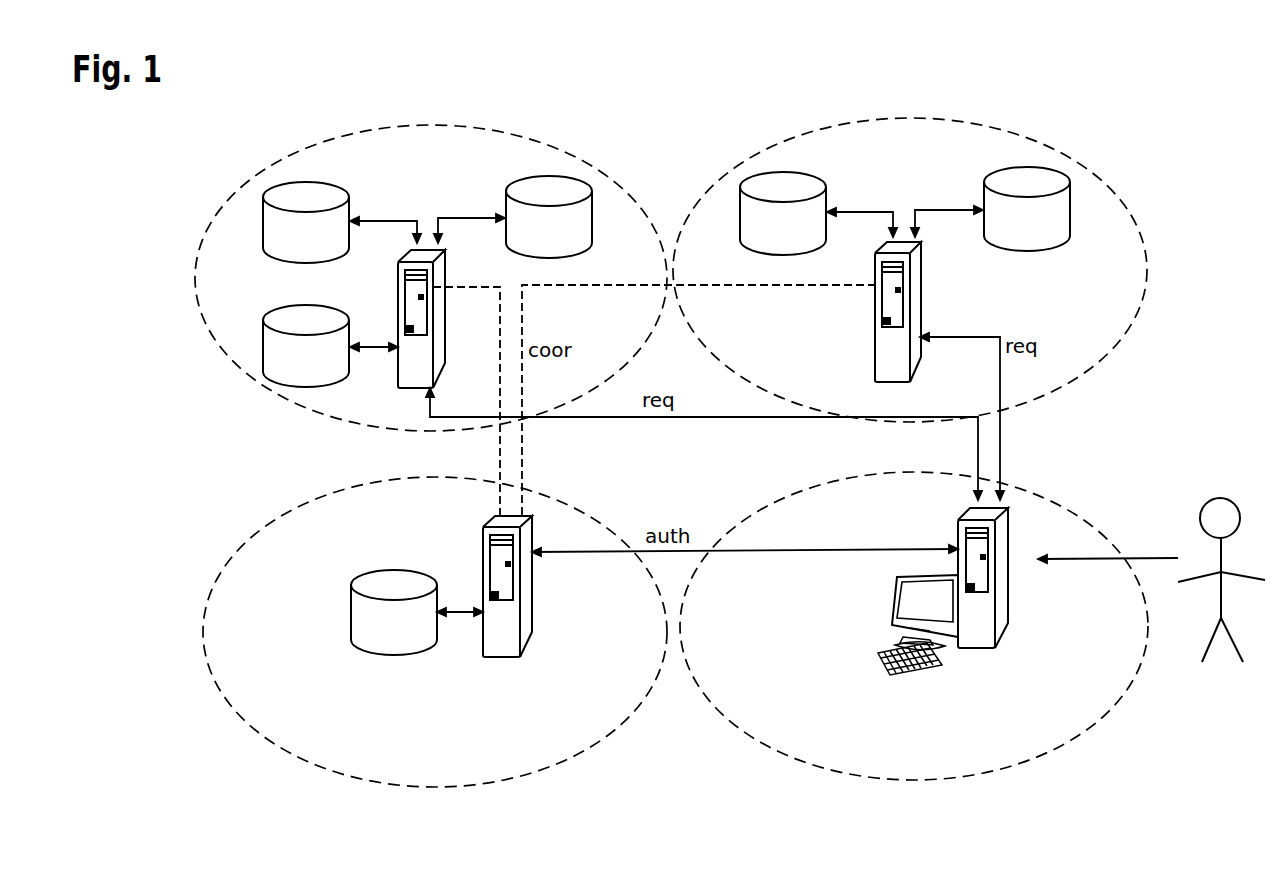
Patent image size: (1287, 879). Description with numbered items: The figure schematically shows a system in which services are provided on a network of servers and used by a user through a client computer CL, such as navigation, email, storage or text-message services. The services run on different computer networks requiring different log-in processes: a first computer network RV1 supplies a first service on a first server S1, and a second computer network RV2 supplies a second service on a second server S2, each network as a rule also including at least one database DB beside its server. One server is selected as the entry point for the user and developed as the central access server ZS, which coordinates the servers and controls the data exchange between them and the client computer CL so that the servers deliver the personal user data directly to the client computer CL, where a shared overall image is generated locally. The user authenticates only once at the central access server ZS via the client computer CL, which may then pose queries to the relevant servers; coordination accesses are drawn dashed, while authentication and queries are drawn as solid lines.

The first computer network RV1 is at (623, 190).
The second computer network RV2 is at (1102, 180).
The first server S1 is at (398, 285).
The second server S2 is at (920, 278).
The central access server ZS is at (532, 598).
The client computer CL is at (1103, 713).
The database DB is at (666, 411).